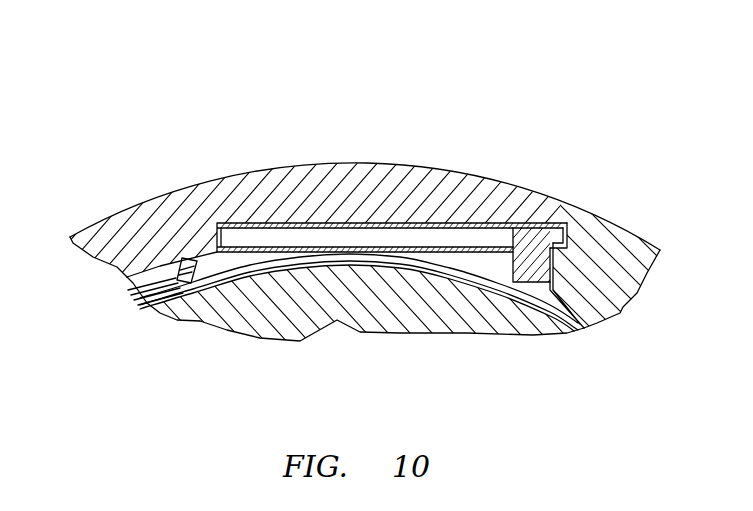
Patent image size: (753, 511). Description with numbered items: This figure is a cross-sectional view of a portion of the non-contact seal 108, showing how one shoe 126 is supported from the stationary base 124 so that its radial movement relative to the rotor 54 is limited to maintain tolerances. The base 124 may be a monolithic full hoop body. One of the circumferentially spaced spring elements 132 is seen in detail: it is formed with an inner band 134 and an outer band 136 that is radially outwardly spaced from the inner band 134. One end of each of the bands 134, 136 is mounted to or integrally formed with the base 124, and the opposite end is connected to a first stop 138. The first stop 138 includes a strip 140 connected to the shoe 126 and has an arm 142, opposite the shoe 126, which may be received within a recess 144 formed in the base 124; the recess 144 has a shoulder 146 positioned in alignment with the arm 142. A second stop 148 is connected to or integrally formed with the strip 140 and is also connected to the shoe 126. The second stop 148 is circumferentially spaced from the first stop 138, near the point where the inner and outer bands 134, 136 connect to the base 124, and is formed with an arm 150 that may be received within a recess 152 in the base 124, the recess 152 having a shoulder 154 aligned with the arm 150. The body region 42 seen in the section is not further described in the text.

The non-contact seal 108 is at (178, 91).
The stationary base 124 is at (120, 230).
The shoe 126 is at (157, 310).
The spring element 132 is at (489, 208).
The inner band 134 is at (255, 268).
The outer band 136 is at (367, 223).
The first stop 138 is at (533, 222).
The strip 140 is at (531, 276).
The arm 142 is at (580, 215).
The recess 144 is at (600, 228).
The shoulder 146 is at (563, 250).
The second stop 148 is at (188, 292).
The arm 150 is at (187, 257).
The recess 152 is at (180, 263).
The shoulder 154 is at (150, 284).
The body 42 is at (337, 321).
The rotor 54 is at (473, 313).